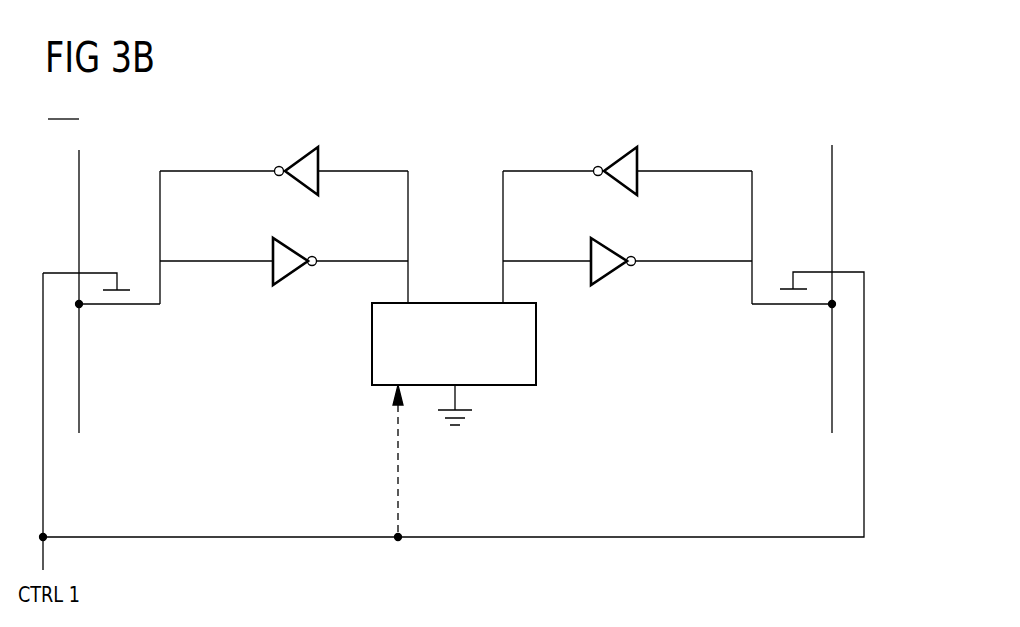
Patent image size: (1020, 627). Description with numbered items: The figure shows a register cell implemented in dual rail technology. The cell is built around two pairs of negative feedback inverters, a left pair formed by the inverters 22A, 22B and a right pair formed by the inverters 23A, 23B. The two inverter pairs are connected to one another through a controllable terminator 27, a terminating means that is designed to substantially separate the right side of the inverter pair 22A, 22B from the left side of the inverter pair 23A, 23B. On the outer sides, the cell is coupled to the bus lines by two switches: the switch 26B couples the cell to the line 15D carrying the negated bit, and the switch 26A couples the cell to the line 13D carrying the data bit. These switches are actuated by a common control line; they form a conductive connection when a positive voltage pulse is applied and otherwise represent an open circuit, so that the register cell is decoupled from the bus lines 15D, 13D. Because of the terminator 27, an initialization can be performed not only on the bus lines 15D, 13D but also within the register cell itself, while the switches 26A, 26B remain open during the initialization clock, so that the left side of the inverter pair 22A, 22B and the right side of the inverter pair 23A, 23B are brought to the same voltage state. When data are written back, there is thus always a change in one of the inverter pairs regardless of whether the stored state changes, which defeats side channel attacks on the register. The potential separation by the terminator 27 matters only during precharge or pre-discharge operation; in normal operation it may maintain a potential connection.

The line for the negated bit 15D is at (79, 195).
The line for a data bit 13D is at (835, 217).
The negative feedback inverter 22A is at (300, 157).
The negative feedback inverter 22B is at (292, 275).
The negative feedback inverter 23A is at (620, 153).
The negative feedback inverter 23B is at (612, 275).
The switch 26A is at (793, 313).
The switch 26B is at (116, 313).
The controllable terminator 27 is at (536, 372).